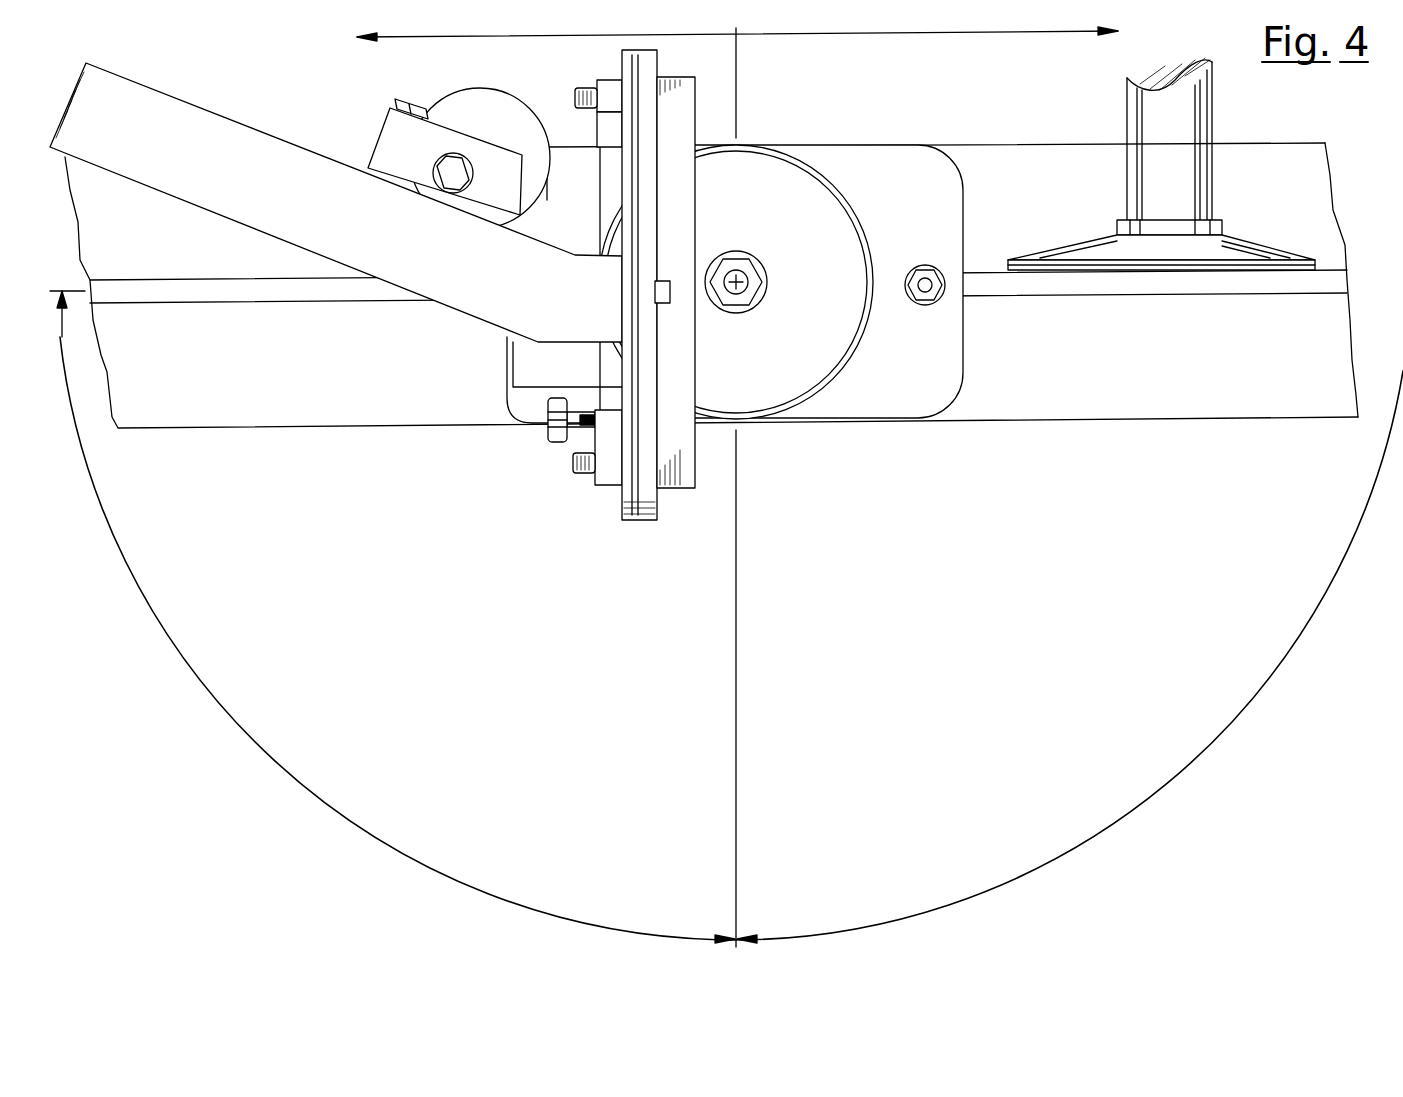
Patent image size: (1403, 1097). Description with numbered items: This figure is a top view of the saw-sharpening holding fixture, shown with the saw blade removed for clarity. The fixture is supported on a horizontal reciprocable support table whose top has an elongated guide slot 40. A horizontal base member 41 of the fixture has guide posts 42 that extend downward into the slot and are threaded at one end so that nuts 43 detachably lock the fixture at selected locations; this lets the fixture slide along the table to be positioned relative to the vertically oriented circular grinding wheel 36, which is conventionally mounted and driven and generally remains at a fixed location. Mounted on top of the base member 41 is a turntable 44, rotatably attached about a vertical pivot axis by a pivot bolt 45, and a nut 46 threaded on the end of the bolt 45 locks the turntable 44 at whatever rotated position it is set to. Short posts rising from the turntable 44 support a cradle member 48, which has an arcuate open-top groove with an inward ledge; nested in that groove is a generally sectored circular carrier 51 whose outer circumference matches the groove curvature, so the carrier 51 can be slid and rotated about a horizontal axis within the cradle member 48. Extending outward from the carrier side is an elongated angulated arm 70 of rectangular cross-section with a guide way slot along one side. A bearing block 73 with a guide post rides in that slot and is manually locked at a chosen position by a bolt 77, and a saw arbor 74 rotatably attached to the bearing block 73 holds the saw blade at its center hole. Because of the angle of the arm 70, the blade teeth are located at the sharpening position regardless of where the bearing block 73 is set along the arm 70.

The grinding wheel 36 is at (1262, 240).
The guide slot 40 is at (1082, 282).
The base member 41 is at (925, 398).
The guide posts 42 is at (925, 266).
The nuts 43 is at (920, 302).
The turntable 44 is at (813, 170).
The pivot bolt 45 is at (741, 274).
The nut 46 is at (740, 306).
The cradle member 48 is at (697, 468).
The carrier 51 is at (632, 522).
The arm 70 is at (192, 120).
The bearing block 73 is at (390, 137).
The saw arbor 74 is at (518, 102).
The bolt 77 is at (405, 100).